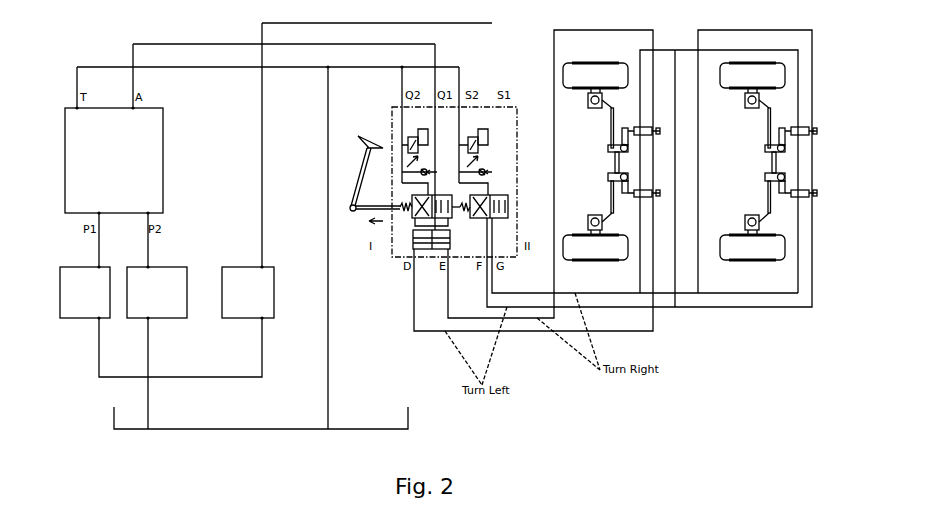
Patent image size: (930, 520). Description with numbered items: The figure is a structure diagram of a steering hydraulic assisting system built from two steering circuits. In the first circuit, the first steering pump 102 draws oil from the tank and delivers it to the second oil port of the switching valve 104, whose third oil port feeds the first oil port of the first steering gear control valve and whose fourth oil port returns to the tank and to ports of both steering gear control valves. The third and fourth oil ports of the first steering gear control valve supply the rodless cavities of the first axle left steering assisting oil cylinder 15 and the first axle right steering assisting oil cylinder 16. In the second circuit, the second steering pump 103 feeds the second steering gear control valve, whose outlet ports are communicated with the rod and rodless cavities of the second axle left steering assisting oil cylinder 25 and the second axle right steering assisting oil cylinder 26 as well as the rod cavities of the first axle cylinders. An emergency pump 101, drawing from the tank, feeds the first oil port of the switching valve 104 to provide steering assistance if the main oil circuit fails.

The emergency pump 101 is at (67, 278).
The first steering pump 102 is at (144, 272).
The second steering pump 103 is at (233, 277).
The switching valve 104 is at (76, 181).
The first axle left steering assisting oil cylinder 15 is at (641, 186).
The first axle right steering assisting oil cylinder 16 is at (641, 144).
The second axle left steering assisting oil cylinder 25 is at (798, 186).
The second axle right steering assisting oil cylinder 26 is at (798, 144).